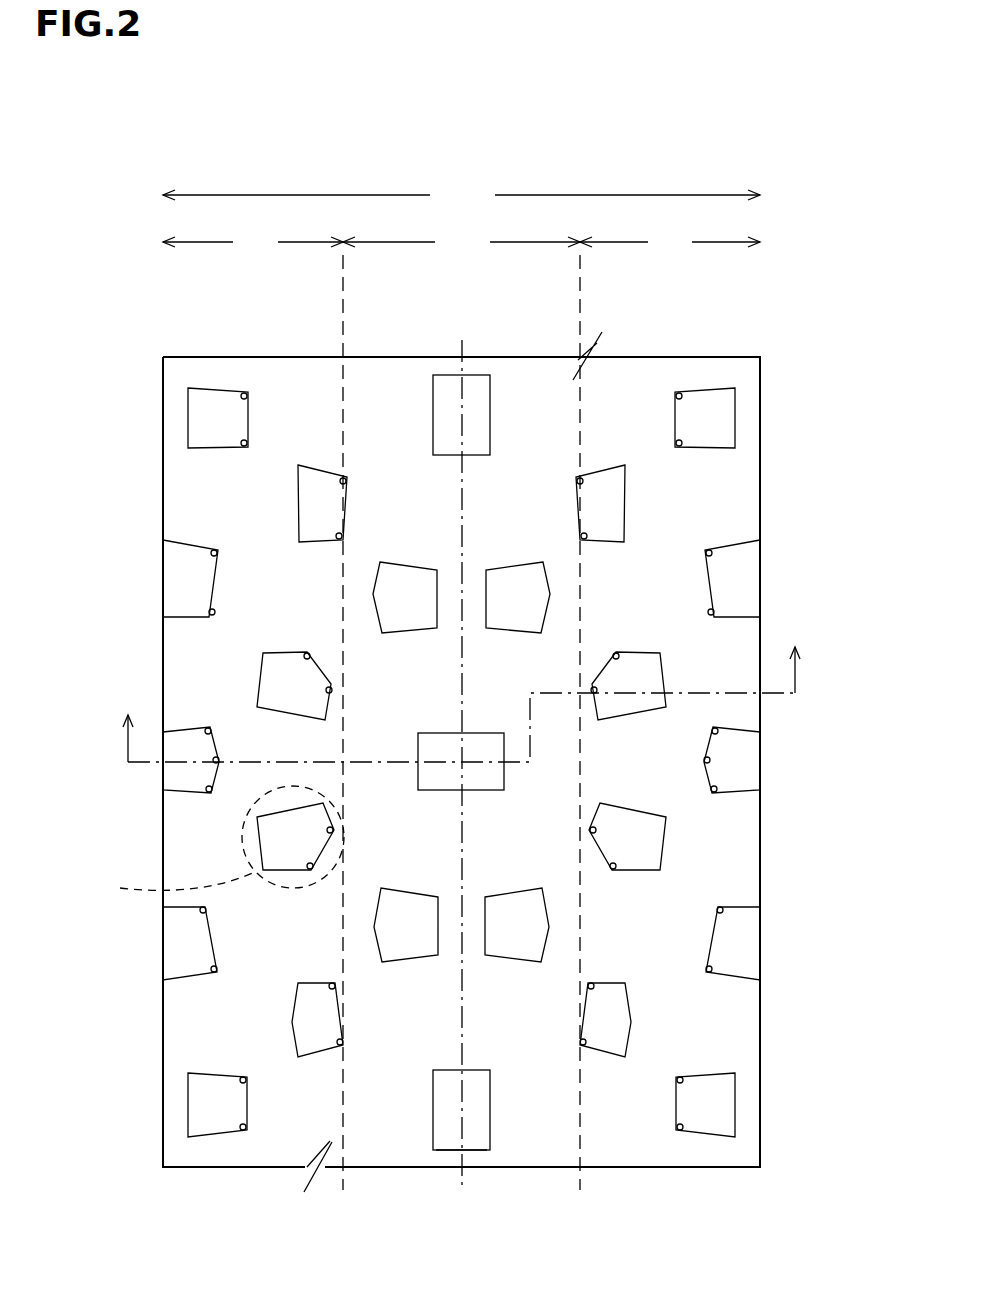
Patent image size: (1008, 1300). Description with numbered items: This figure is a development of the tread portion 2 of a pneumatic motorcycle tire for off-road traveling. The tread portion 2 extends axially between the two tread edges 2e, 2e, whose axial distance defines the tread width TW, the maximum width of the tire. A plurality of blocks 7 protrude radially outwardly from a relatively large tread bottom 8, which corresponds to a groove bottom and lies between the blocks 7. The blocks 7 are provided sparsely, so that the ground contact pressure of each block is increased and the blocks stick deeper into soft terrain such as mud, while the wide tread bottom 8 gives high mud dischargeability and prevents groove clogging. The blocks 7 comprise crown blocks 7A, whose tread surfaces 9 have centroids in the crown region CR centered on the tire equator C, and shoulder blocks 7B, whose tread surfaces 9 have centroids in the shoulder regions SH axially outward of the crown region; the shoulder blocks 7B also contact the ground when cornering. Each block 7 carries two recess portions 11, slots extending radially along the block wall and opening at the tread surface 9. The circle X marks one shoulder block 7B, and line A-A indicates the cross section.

The tread portion 2 is at (777, 317).
The tread edge 2e is at (163, 570).
The block 7 is at (470, 774).
The crown block 7A is at (442, 400).
The shoulder block 7B is at (197, 415).
The tread bottom 8 is at (412, 498).
The tread surface 9 is at (443, 1123).
The recess portion 11 is at (247, 393).